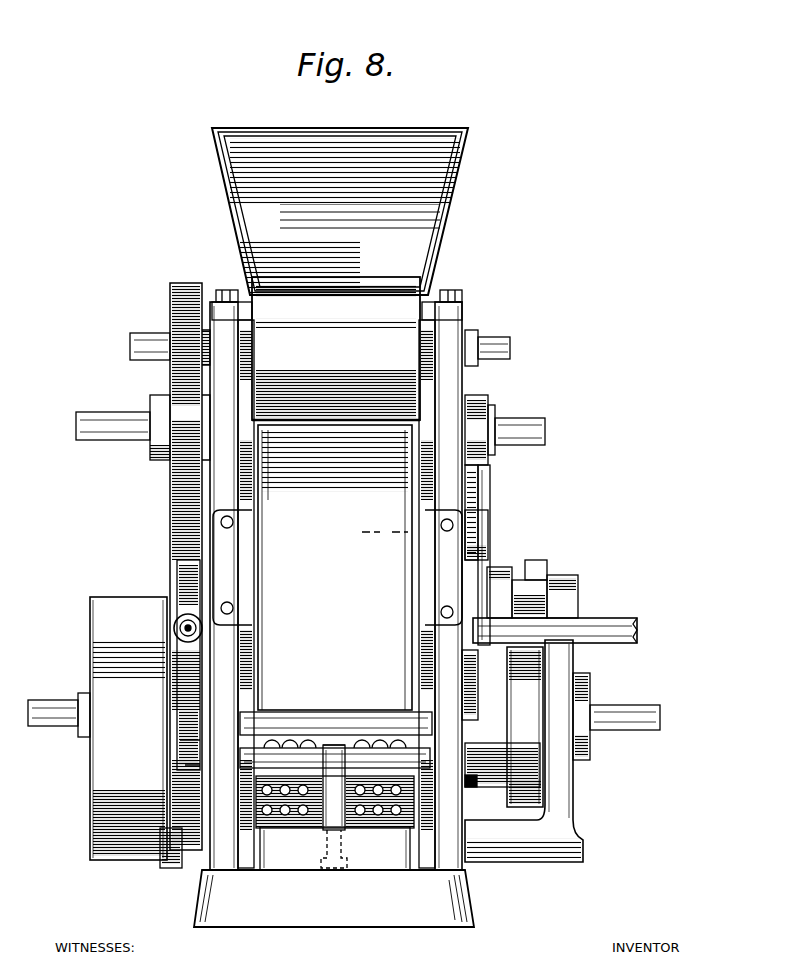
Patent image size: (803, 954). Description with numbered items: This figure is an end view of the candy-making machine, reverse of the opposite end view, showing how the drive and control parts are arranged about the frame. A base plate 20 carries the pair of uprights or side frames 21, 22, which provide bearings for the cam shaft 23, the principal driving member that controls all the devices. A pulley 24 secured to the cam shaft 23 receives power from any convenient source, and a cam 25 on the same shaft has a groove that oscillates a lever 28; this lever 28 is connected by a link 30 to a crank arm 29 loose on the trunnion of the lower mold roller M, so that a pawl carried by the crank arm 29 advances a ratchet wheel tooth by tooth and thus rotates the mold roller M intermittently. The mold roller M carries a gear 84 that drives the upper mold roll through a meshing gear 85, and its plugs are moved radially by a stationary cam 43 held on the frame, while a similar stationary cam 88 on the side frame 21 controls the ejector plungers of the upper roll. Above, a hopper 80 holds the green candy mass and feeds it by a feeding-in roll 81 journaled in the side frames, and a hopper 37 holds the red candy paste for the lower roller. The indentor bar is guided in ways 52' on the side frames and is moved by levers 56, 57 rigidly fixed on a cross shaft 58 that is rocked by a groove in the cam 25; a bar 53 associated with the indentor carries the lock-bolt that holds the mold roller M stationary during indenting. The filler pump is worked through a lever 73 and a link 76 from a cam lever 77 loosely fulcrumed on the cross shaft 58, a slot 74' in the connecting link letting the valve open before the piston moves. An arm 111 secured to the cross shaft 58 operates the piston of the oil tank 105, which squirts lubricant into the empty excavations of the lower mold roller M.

The hopper 80 is at (432, 217).
The feeding-in roll 81 is at (282, 296).
The hopper 37 is at (290, 540).
The side frame 21 is at (452, 386).
The cam 88 is at (432, 342).
The cam 43 is at (252, 675).
The gear 85 is at (170, 372).
The gear 84 is at (165, 858).
The side frame 22 is at (176, 432).
The pulley 24 is at (110, 776).
The cam shaft 23 is at (76, 736).
The lever 56 is at (183, 694).
The lever 73 is at (480, 422).
The slot 74' is at (504, 555).
The ways 52' is at (522, 512).
The bar 53 is at (480, 542).
The lever 57 is at (498, 586).
The crank arm 29 is at (546, 572).
The link 30 is at (566, 576).
The link 76 is at (530, 637).
The cam 25 is at (530, 703).
The lever 28 is at (566, 784).
The cam lever 77 is at (470, 786).
The cross shaft 58 is at (283, 740).
The arm 111 is at (340, 732).
The tank 105 is at (304, 860).
The lower mold roller M is at (300, 830).
The base plate 20 is at (350, 905).